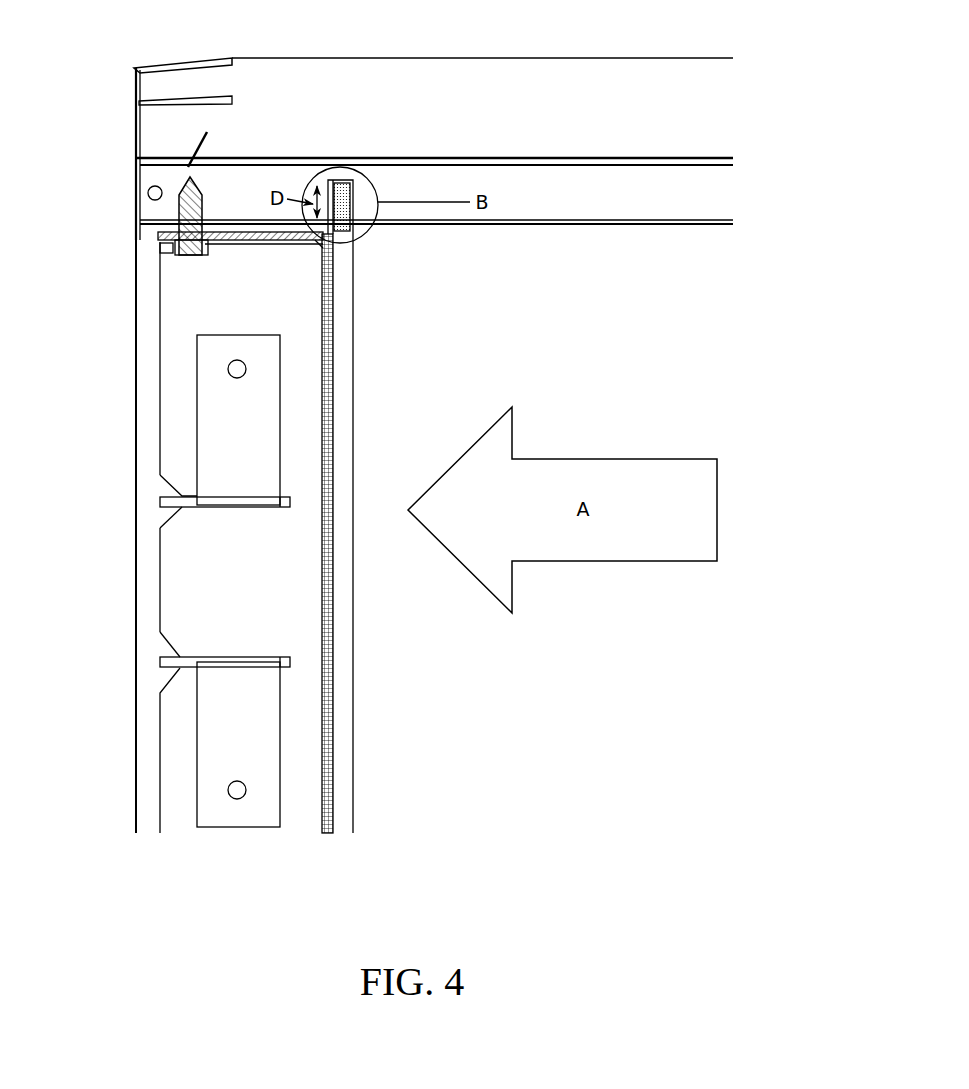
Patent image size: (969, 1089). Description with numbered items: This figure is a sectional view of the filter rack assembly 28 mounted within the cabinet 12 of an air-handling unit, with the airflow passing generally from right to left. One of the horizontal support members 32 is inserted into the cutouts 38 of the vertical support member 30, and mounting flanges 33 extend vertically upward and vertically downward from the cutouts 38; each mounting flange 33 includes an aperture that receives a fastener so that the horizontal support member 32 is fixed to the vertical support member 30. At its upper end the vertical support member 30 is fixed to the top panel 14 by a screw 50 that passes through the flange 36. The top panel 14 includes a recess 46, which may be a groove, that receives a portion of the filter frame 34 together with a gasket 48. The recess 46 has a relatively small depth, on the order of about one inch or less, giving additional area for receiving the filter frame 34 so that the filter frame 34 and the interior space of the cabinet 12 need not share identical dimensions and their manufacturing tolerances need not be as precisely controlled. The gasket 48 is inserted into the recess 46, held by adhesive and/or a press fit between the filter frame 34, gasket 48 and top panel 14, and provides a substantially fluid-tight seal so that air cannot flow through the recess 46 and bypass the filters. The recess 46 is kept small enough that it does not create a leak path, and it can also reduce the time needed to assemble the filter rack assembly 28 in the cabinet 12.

The cabinet 12 is at (103, 62).
The top panel 14 is at (444, 109).
The filter rack assembly 28 is at (107, 860).
The vertical support member 30 is at (247, 587).
The horizontal support member 32 is at (197, 448).
The mounting flange 33 is at (251, 430).
The filter frame 34 is at (334, 335).
The flange 36 is at (158, 237).
The cutout 38 is at (167, 519).
The recess 46 is at (358, 215).
The gasket 48 is at (354, 193).
The screw 50 is at (165, 254).